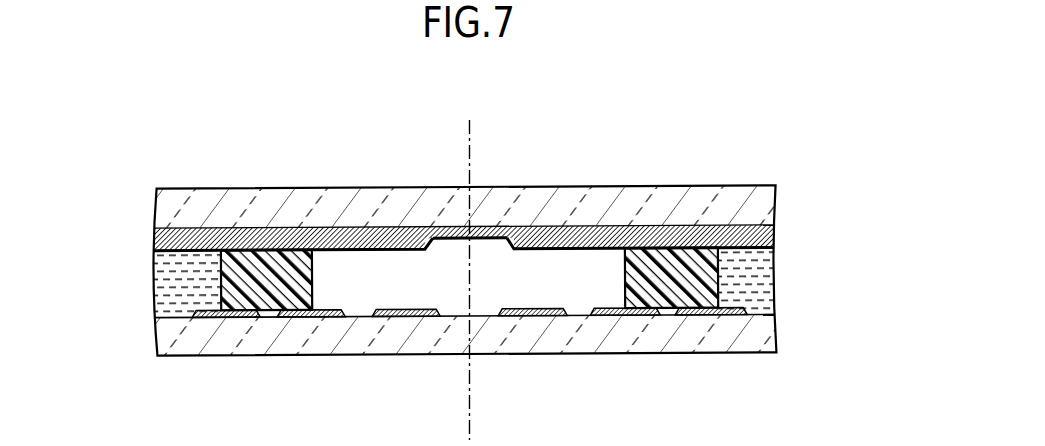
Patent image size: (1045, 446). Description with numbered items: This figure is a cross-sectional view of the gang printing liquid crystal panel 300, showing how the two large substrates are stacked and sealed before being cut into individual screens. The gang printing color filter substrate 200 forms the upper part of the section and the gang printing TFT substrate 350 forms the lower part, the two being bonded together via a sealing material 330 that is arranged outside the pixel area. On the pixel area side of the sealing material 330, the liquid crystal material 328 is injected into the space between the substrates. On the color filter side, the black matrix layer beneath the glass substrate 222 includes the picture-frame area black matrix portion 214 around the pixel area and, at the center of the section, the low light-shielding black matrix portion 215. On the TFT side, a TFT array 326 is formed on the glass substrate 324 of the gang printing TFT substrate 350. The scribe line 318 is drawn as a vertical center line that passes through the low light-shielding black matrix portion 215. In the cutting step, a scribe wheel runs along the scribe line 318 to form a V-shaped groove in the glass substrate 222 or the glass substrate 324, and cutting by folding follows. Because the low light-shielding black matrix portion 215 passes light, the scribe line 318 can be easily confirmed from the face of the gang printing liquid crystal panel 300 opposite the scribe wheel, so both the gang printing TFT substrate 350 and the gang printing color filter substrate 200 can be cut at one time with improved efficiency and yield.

The gang printing liquid crystal panel 300 is at (638, 84).
The gang printing color filter substrate 200 is at (135, 224).
The gang printing TFT substrate 350 is at (135, 334).
The picture-frame area black matrix portion 214 is at (265, 238).
The low light-shielding black matrix portion 215 is at (448, 230).
The glass substrate 222 is at (604, 198).
The scribe line 318 is at (476, 122).
The glass substrate 324 is at (618, 340).
The TFT array 326 is at (532, 318).
The liquid crystal material 328 is at (765, 262).
The sealing material 330 is at (693, 288).